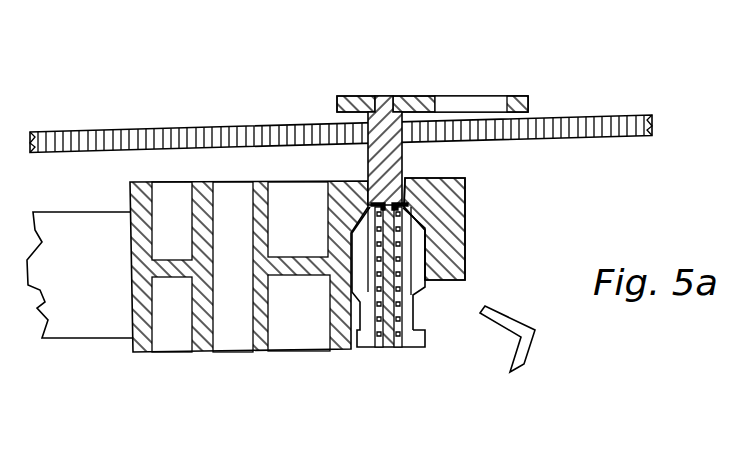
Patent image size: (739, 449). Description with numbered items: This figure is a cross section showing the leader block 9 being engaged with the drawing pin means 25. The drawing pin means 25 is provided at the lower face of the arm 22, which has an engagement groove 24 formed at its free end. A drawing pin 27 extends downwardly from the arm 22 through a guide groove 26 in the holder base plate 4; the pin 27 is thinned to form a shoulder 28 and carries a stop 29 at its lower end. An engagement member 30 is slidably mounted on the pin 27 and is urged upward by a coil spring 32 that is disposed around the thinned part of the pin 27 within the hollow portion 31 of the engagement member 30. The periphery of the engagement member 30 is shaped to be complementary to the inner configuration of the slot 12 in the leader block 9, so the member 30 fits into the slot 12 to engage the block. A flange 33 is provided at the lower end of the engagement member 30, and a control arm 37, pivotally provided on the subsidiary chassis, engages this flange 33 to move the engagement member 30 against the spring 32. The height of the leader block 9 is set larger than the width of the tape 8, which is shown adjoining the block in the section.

The holder base plate 4 is at (578, 121).
The tape 8 is at (88, 339).
The leader block 9 is at (238, 340).
The slot 12 is at (426, 268).
The arm 22 is at (403, 96).
The engagement groove 24 is at (483, 104).
The drawing pin means 25 is at (412, 247).
The guide groove 26 is at (371, 147).
The drawing pin 27 is at (398, 166).
The shoulder 28 is at (404, 206).
The stop 29 is at (394, 350).
The engagement member 30 is at (406, 291).
The hollow portion 31 is at (372, 288).
The coil spring 32 is at (402, 305).
The flange 33 is at (369, 349).
The control arm 37 is at (532, 342).